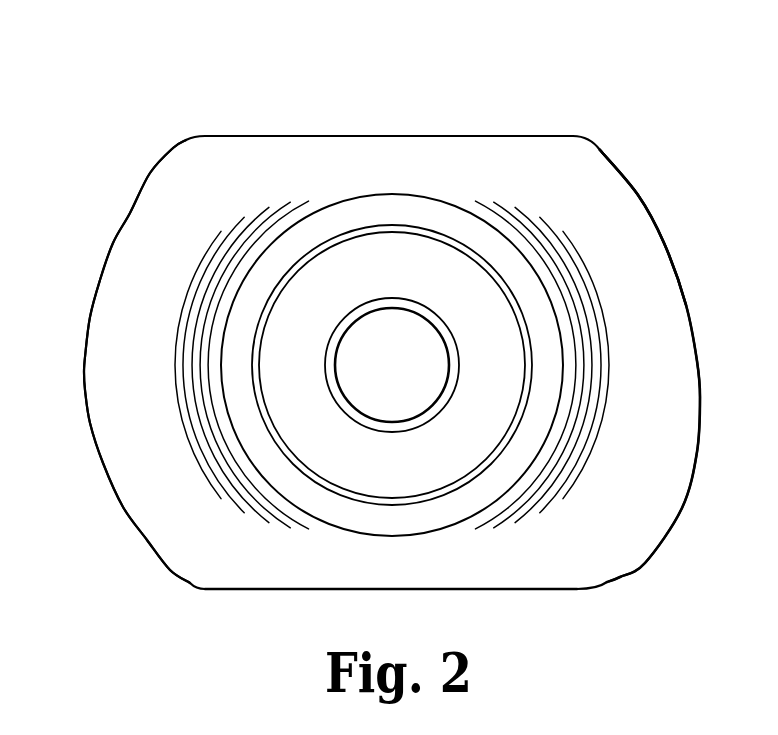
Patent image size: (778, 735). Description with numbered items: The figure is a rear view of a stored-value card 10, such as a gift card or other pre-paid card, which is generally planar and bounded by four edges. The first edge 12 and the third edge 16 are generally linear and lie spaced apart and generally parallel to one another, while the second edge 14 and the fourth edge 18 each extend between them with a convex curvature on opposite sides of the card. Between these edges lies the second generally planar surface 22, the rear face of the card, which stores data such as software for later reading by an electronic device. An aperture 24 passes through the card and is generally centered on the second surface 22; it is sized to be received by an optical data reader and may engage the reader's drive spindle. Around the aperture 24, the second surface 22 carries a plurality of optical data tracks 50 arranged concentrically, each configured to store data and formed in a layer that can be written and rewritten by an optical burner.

The stored-value card 10 is at (589, 86).
The first edge 12 is at (389, 136).
The second edge 14 is at (92, 294).
The third edge 16 is at (555, 590).
The fourth edge 18 is at (697, 402).
The second generally planar surface 22 is at (622, 200).
The aperture 24 is at (437, 363).
The optical data tracks 50 is at (197, 290).